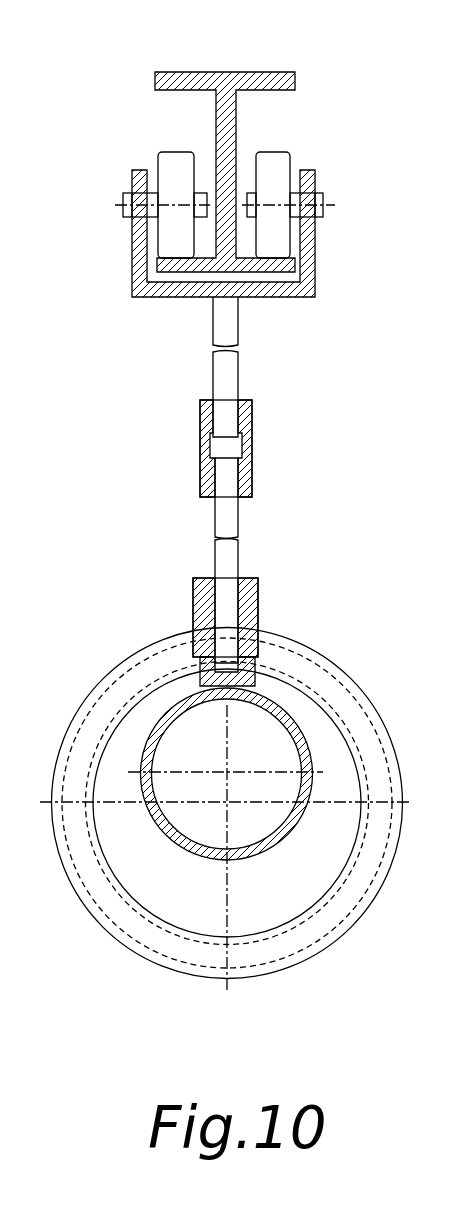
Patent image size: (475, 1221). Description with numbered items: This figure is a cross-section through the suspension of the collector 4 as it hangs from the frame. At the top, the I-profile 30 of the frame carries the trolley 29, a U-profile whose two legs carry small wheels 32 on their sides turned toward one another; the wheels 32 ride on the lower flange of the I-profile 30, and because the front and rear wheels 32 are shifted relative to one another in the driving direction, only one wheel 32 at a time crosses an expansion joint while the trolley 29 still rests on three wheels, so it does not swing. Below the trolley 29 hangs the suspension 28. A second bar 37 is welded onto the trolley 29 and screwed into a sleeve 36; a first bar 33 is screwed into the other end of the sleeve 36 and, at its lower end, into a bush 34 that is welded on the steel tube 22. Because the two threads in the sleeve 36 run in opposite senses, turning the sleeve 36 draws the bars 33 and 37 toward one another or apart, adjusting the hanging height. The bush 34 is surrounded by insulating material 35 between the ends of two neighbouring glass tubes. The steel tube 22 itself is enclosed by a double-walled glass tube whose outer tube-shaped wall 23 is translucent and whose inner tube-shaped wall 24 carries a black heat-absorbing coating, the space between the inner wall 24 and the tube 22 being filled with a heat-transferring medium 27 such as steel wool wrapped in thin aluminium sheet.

The collector 4 is at (347, 502).
The steel tube 22 is at (186, 843).
The outer tube-shaped wall 23 is at (345, 922).
The inner tube-shaped wall 24 is at (277, 937).
The heat-transferring medium 27 is at (115, 853).
The suspension 28 is at (181, 494).
The trolley 29 is at (296, 299).
The I-profile 30 is at (227, 70).
The wheels 32 is at (162, 156).
The first bar 33 is at (231, 553).
The bush 34 is at (258, 615).
The insulating material 35 is at (193, 600).
The sleeve 36 is at (252, 443).
The second bar 37 is at (222, 366).